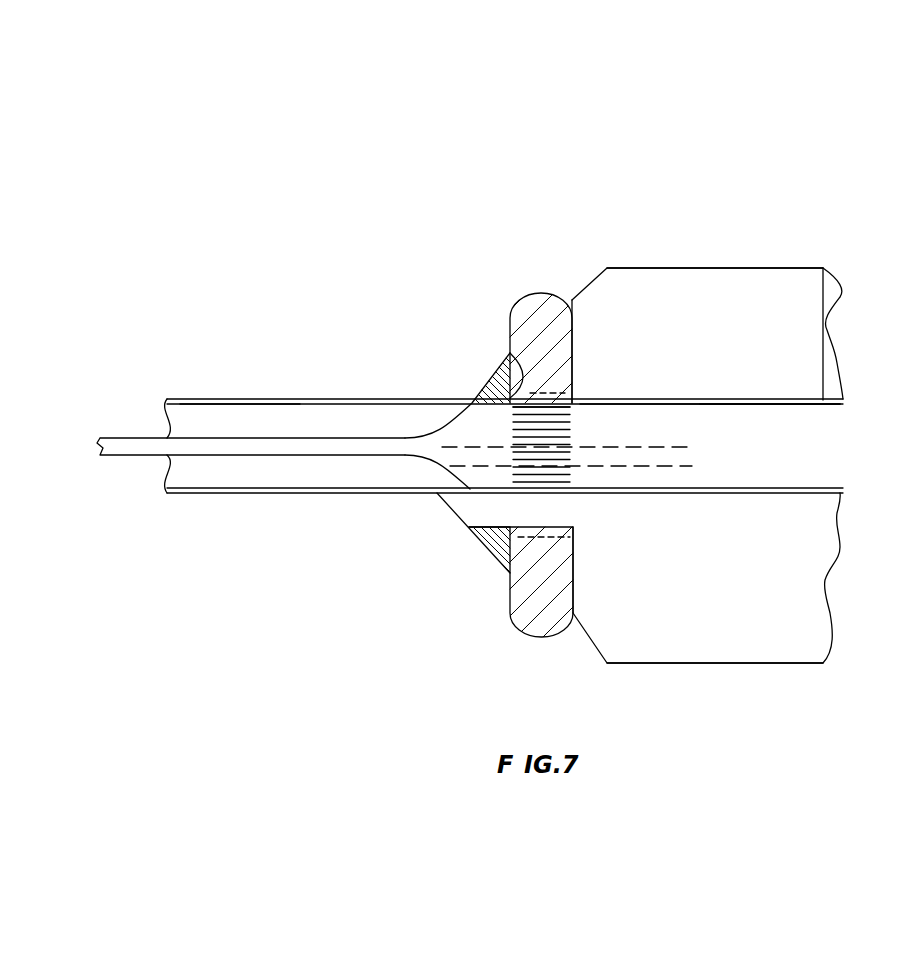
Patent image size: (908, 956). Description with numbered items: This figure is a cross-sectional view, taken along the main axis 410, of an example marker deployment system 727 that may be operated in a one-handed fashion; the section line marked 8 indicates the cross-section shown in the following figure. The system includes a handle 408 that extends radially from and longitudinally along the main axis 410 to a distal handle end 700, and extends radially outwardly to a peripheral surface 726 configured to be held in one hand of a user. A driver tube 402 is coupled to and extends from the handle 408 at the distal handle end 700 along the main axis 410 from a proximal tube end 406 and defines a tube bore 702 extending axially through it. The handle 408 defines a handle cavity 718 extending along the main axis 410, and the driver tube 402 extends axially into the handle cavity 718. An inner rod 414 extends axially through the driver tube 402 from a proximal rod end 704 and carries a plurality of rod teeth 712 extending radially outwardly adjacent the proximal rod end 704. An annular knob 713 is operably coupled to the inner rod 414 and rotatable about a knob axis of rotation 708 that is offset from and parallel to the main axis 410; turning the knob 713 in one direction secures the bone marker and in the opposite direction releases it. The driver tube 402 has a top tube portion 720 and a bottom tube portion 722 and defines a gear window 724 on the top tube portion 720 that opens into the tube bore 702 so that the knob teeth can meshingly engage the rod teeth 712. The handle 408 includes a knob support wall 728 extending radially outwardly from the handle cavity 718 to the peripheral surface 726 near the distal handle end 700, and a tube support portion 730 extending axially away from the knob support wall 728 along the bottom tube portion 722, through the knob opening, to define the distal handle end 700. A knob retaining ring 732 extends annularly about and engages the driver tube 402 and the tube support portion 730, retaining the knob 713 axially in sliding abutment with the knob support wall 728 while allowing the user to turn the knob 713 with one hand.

The marker deployment system 727 is at (403, 170).
The handle 408 is at (795, 230).
The proximal tube end 406 is at (810, 398).
The peripheral surface 726 is at (693, 267).
The knob 713 is at (557, 290).
The gear window 724 is at (510, 353).
The knob retaining ring 732 is at (505, 388).
The knob support wall 728 is at (577, 332).
The rod teeth 712 is at (553, 437).
The main axis 410 is at (668, 445).
The proximal rod end 704 is at (790, 458).
The knob axis of rotation 708 is at (658, 468).
The handle cavity 718 is at (728, 478).
The tube support portion 730 is at (553, 521).
The distal handle end 700 is at (440, 498).
The tube bore 702 is at (246, 413).
The top tube portion 720 is at (305, 398).
The bottom tube portion 722 is at (355, 495).
The driver tube 402 is at (207, 398).
The inner rod 414 is at (278, 447).
The section line 8- 8 is at (540, 250).